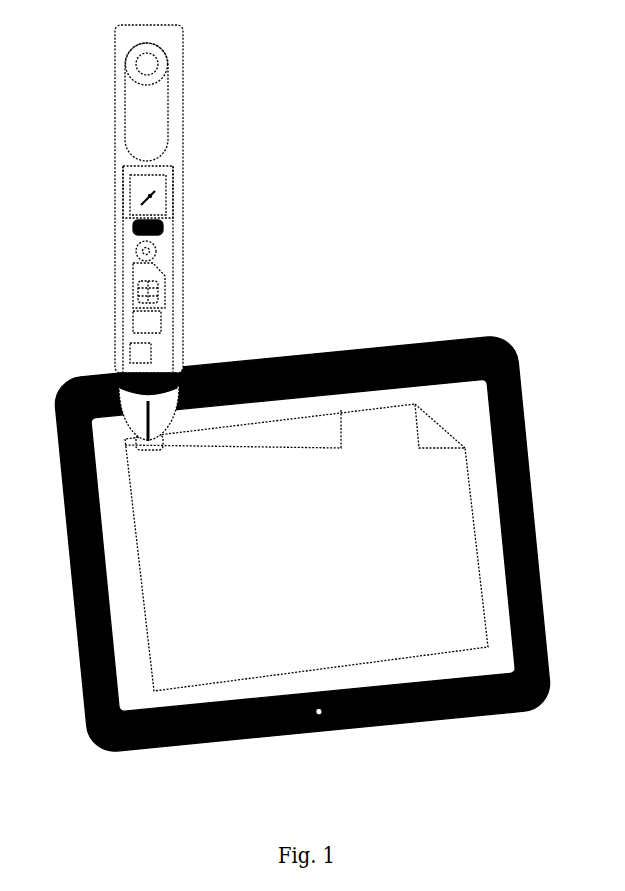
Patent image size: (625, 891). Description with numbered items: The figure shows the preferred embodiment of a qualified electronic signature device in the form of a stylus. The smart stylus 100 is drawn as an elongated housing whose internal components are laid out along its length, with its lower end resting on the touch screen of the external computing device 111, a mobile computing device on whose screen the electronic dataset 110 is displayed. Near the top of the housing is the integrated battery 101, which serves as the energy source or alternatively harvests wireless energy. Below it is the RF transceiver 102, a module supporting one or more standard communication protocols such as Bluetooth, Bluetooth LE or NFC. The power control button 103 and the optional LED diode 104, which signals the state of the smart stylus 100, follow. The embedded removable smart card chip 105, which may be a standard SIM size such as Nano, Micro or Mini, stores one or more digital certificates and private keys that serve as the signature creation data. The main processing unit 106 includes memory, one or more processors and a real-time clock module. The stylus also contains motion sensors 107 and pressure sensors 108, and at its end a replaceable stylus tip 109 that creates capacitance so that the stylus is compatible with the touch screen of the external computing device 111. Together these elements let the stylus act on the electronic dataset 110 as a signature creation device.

The smart stylus 100 is at (175, 52).
The integrated battery 101 is at (160, 95).
The RF transceiver 102 is at (165, 185).
The power control button 103 is at (157, 222).
The LED diode 104 is at (127, 243).
The smart card chip 105 is at (158, 279).
The main processing unit 106 is at (125, 313).
The motion sensors 107 is at (145, 345).
The pressure sensors 108 is at (112, 355).
The replaceable stylus tip 109 is at (333, 401).
The electronic dataset 110 is at (407, 396).
The external computing device 111 is at (526, 378).